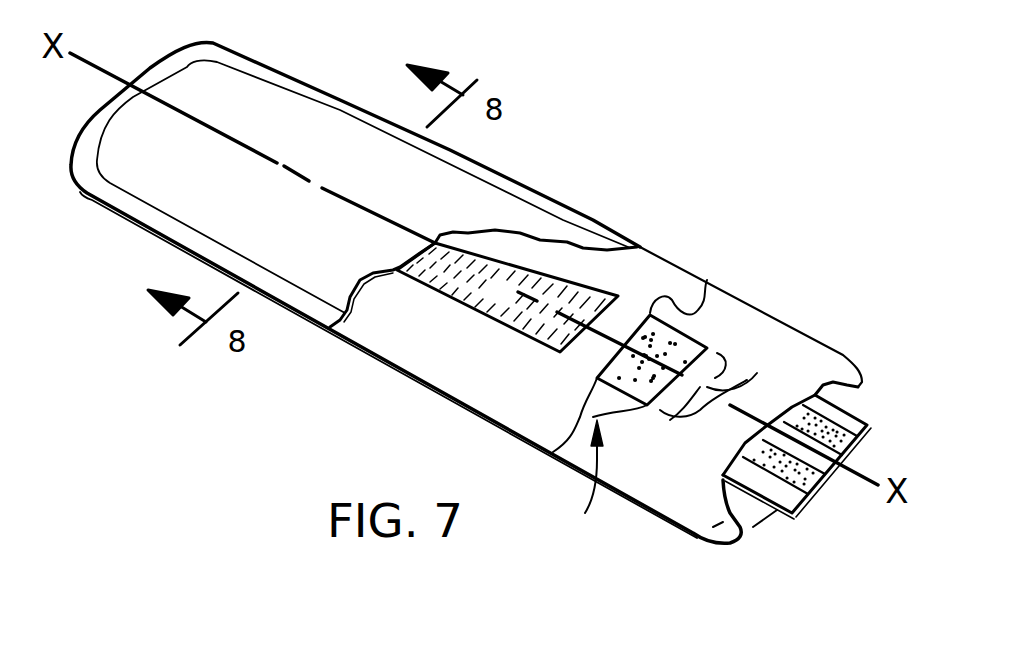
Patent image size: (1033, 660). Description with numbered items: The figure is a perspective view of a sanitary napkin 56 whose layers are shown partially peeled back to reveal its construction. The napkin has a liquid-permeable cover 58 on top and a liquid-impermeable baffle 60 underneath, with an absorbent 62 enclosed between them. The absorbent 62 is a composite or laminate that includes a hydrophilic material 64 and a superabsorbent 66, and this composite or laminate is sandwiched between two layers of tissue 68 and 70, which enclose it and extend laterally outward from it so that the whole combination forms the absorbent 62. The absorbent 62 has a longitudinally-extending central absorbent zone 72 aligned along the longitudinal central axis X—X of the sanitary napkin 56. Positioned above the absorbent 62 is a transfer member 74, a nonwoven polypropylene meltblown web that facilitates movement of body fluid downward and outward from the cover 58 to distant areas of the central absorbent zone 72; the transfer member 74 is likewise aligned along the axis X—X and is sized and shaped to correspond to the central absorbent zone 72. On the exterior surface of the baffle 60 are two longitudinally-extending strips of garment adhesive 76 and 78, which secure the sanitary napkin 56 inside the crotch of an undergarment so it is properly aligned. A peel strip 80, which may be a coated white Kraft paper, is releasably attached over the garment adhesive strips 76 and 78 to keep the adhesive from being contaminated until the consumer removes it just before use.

The sanitary napkin 56 is at (660, 85).
The liquid-permeable cover 58 is at (300, 110).
The liquid-impermeable baffle 60 is at (686, 533).
The absorbent 62 is at (574, 482).
The hydrophilic material 64 is at (646, 408).
The superabsorbent 66 is at (632, 328).
The tissue layer 68 is at (673, 268).
The tissue layer 70 is at (707, 292).
The central absorbent zone 72 is at (672, 396).
The transfer member 74 is at (474, 297).
The strip of garment adhesive 76 is at (777, 487).
The strip of garment adhesive 78 is at (840, 413).
The peel strip 80 is at (837, 477).